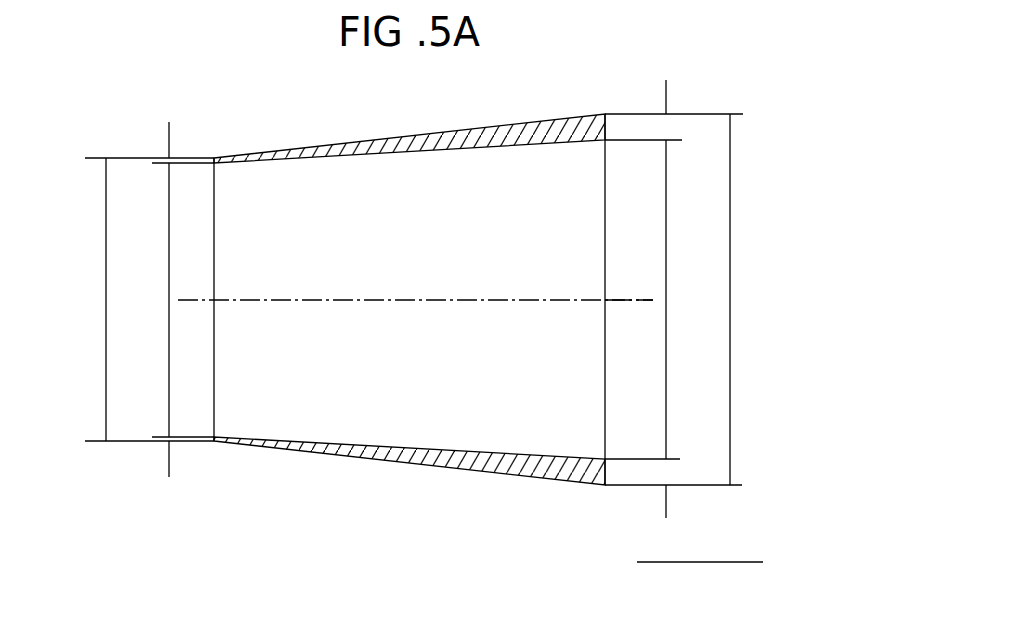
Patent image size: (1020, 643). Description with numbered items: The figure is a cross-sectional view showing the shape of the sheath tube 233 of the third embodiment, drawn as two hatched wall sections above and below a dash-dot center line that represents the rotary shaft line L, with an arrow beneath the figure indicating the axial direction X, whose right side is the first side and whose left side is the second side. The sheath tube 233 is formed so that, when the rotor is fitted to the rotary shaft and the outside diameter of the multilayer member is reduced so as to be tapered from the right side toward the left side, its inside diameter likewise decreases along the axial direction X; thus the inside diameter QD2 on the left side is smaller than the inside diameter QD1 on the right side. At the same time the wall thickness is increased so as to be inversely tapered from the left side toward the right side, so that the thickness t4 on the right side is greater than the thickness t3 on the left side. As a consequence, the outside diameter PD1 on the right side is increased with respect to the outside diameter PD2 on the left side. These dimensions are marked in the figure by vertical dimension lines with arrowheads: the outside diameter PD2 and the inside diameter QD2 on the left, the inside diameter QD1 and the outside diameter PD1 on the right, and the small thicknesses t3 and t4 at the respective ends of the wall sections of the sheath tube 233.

The sheath tube 233 is at (428, 137).
The outside diameter on the X2 side PD2 is at (133, 299).
The inside diameter on the X2 side QD2 is at (164, 300).
The thickness on the X2 side t3 is at (153, 302).
The inside diameter on the X1 side QD1 is at (660, 299).
The outside diameter on the X1 side PD1 is at (695, 299).
The thickness on the X1 side t4 is at (686, 299).
The rotary shaft line L is at (633, 300).
The axial direction X is at (722, 562).